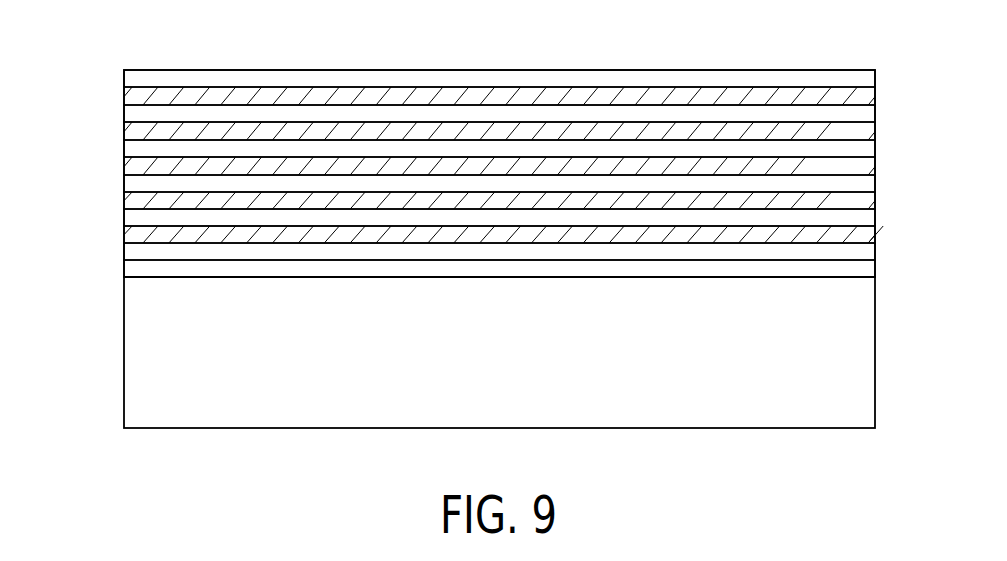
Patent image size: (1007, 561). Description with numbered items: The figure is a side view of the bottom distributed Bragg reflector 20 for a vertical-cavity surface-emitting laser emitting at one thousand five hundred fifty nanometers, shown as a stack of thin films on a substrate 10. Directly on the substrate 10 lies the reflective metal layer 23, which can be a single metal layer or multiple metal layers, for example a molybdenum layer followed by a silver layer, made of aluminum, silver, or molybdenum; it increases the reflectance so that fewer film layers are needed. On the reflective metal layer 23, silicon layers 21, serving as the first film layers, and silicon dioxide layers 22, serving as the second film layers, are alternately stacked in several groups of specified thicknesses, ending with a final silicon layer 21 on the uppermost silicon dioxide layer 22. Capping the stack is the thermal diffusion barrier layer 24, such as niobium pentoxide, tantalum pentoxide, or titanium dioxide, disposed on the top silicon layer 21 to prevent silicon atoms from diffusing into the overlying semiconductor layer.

The substrate 10 is at (857, 358).
The bottom distributed Bragg reflector 20 is at (891, 72).
The silicon layer 21 is at (134, 97).
The silicon dioxide layer 22 is at (134, 115).
The reflective metal layer 23 is at (133, 268).
The thermal diffusion barrier layer 24 is at (137, 80).